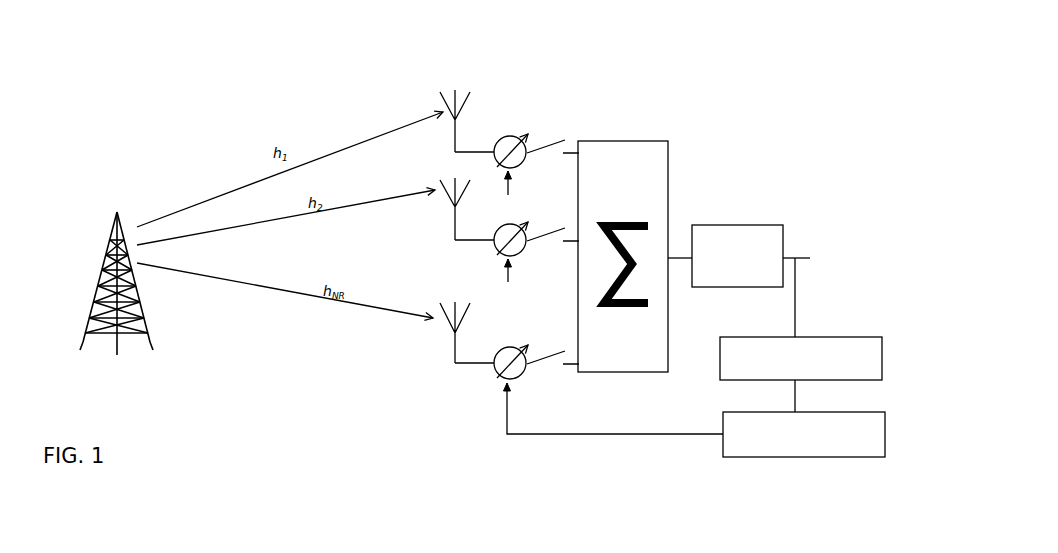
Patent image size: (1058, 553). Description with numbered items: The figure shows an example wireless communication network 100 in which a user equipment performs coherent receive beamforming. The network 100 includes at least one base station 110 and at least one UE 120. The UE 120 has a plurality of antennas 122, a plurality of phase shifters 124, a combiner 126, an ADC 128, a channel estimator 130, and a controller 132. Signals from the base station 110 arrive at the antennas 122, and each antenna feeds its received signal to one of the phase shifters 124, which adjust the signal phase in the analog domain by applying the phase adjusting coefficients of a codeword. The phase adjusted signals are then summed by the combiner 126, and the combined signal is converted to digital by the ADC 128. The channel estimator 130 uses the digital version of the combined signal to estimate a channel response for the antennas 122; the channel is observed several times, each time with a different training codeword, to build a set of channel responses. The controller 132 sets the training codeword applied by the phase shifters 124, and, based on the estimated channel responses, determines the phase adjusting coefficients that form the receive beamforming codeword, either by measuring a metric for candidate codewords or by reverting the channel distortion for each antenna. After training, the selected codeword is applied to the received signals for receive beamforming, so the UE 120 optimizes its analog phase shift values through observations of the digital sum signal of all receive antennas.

The network 100 is at (780, 13).
The base station 110 is at (90, 216).
The UE 120 is at (740, 115).
The antennas 122 is at (458, 90).
The phase shifters 124 is at (507, 137).
The combiner 126 is at (625, 141).
The ADC 128 is at (750, 225).
The channel estimator 130 is at (862, 337).
The controller 132 is at (838, 457).